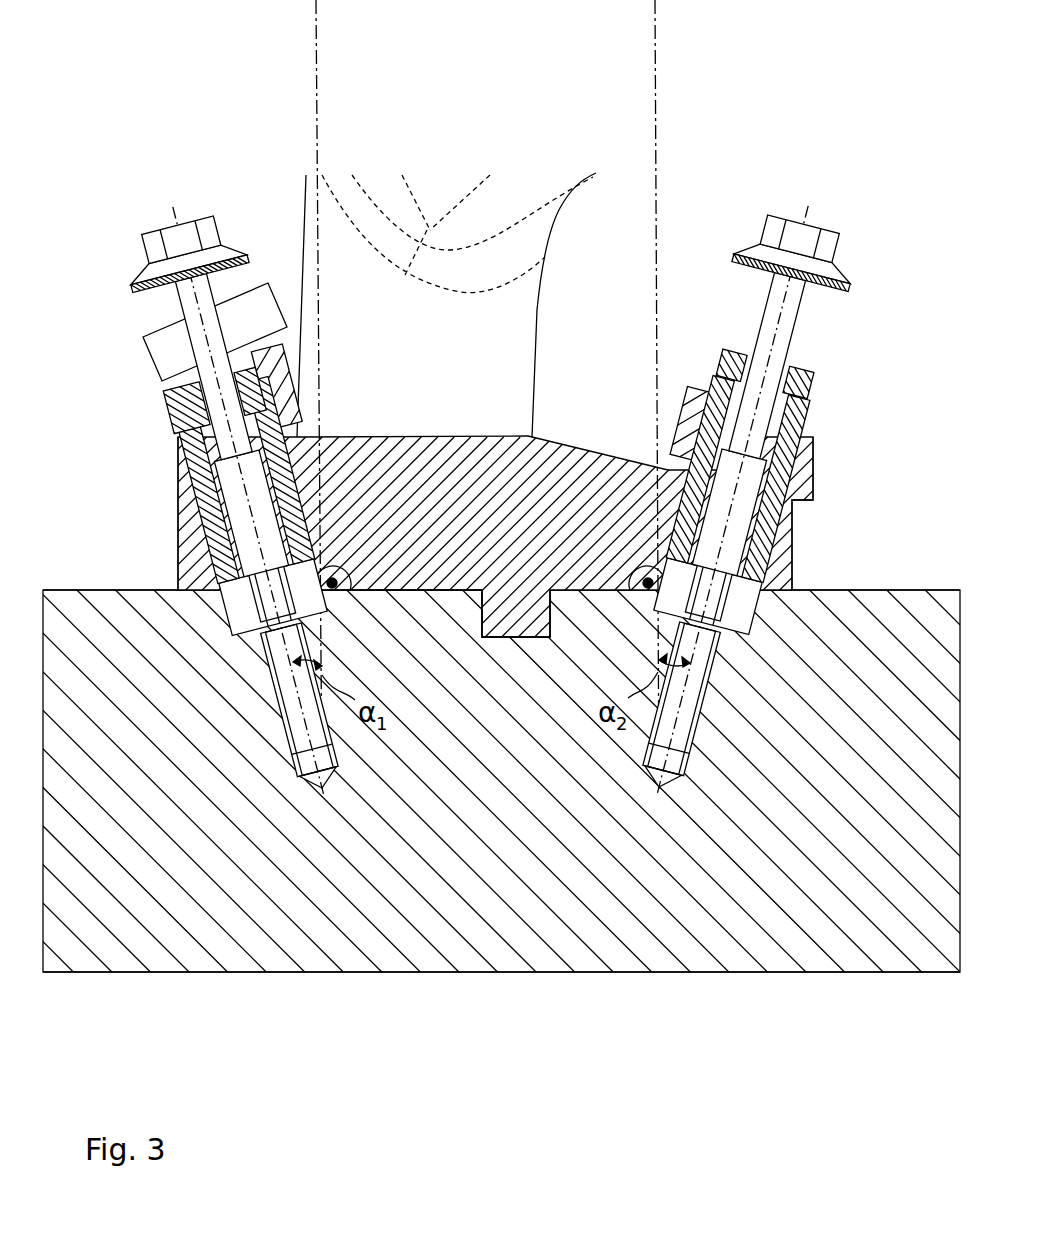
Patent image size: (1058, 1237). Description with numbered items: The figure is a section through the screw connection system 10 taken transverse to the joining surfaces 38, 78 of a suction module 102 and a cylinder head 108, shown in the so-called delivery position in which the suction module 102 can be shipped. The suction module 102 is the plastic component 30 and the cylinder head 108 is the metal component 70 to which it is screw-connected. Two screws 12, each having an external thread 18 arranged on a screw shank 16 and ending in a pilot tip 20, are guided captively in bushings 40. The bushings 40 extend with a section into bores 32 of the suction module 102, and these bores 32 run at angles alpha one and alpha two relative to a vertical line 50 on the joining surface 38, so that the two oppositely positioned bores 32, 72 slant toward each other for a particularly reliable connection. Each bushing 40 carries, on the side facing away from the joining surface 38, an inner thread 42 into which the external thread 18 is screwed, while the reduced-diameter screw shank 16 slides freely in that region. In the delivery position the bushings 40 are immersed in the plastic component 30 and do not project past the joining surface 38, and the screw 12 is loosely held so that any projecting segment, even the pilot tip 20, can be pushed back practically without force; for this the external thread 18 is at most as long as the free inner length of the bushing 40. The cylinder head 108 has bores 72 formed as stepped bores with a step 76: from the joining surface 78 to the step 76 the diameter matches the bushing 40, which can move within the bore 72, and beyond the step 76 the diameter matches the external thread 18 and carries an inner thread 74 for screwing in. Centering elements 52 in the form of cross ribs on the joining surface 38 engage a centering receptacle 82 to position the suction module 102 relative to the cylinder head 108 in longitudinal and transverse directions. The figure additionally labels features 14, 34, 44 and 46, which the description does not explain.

The screw connection system 10 is at (490, 433).
The screw 12 is at (145, 262).
The bolt head 14 is at (176, 222).
The screw shank 16 is at (183, 305).
The external thread 18 is at (235, 510).
The pilot tip 20 is at (258, 597).
The plastic component 30 is at (543, 437).
The bore 32 is at (182, 455).
The boss around bore 34 is at (258, 365).
The joining surface 38 is at (383, 590).
The bushing 40 is at (190, 420).
The inner thread 42 is at (178, 382).
The nut 44 is at (212, 343).
The bolt axis 46 is at (772, 310).
The vertical line 50 is at (318, 62).
The centering element 52 is at (495, 638).
The metal component 70 is at (570, 974).
The bore 72 is at (283, 697).
The inner thread 74 is at (290, 738).
The step 76 is at (235, 640).
The joining surface 78 is at (900, 592).
The centering receptacle 82 is at (520, 640).
The suction module 102 is at (597, 436).
The cylinder head 108 is at (688, 950).